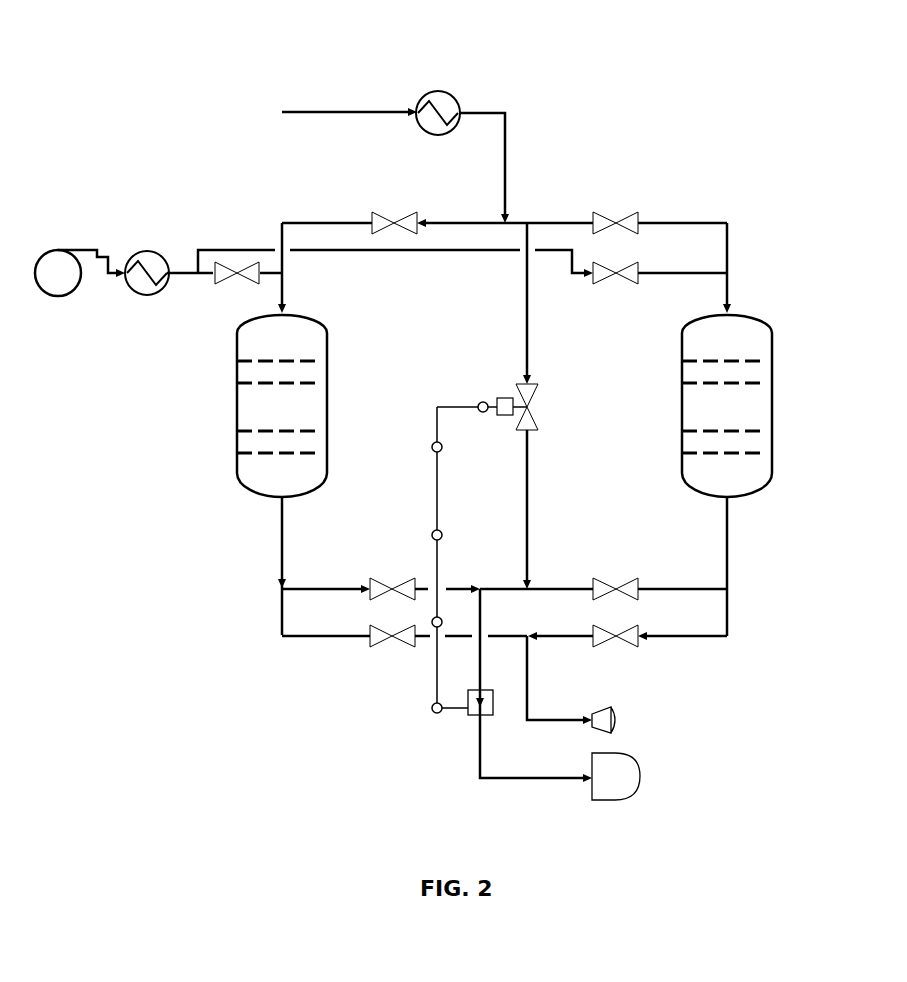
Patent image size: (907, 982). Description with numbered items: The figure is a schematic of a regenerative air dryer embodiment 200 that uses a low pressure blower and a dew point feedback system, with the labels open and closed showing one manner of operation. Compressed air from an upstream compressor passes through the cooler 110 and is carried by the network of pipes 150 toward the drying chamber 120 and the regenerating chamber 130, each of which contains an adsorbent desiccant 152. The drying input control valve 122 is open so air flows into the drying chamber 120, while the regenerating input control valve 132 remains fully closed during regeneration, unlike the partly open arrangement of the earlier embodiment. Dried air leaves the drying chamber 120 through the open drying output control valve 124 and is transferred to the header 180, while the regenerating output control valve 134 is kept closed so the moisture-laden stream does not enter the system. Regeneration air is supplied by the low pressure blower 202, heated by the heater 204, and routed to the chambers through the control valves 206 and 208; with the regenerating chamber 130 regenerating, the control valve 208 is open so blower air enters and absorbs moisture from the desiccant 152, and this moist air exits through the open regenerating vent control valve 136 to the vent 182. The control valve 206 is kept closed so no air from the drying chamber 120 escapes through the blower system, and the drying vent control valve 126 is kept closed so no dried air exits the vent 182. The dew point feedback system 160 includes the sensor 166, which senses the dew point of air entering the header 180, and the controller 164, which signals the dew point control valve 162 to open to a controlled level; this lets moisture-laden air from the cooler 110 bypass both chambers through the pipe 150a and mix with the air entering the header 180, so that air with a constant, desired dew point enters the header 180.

The cooler 110 is at (441, 91).
The drying chamber 120 is at (229, 496).
The drying input control valve 122 is at (371, 220).
The drying output control valve 124 is at (370, 583).
The drying vent control valve 126 is at (378, 636).
The regenerating chamber 130 is at (775, 319).
The regenerating input control valve 132 is at (638, 222).
The regenerating output control valve 134 is at (636, 583).
The regenerating vent control valve 136 is at (630, 640).
The network of pipes 150 is at (737, 242).
The pipe 150a is at (528, 540).
The adsorbent desiccant 152 is at (267, 455).
The dew point feedback system 160 is at (484, 364).
The dew point control valve 162 is at (530, 400).
The controller 164 is at (503, 416).
The sensor 166 is at (474, 715).
The header 180 is at (620, 777).
The vent 182 is at (613, 710).
The regenerative air dryer embodiment 200 is at (723, 107).
The low pressure blower 202 is at (58, 257).
The heater 204 is at (146, 253).
The control valve 206 is at (218, 284).
The control valve 208 is at (633, 281).